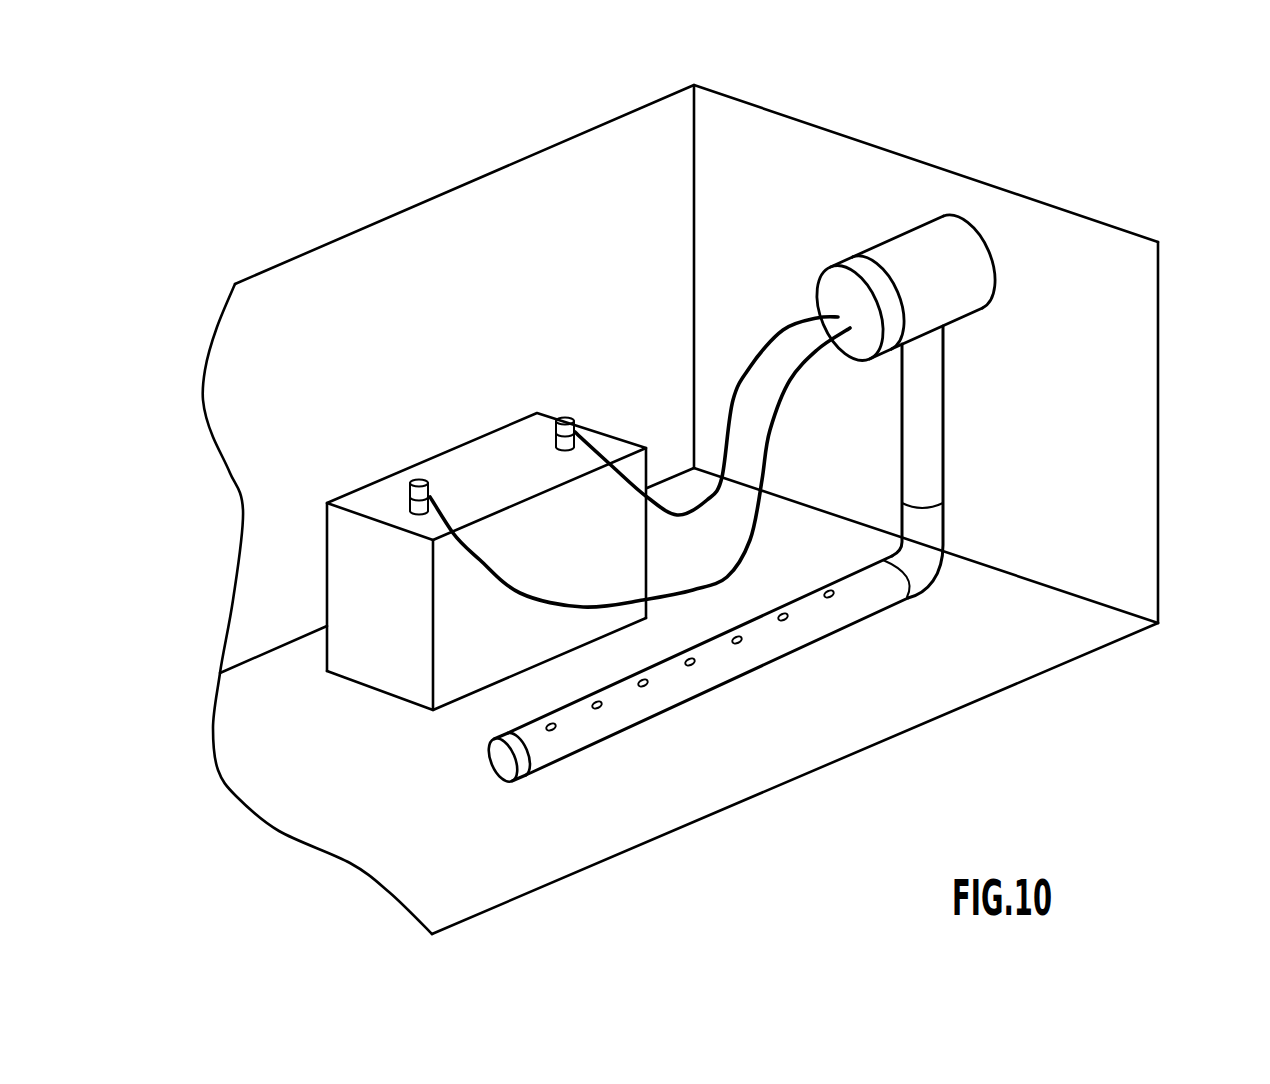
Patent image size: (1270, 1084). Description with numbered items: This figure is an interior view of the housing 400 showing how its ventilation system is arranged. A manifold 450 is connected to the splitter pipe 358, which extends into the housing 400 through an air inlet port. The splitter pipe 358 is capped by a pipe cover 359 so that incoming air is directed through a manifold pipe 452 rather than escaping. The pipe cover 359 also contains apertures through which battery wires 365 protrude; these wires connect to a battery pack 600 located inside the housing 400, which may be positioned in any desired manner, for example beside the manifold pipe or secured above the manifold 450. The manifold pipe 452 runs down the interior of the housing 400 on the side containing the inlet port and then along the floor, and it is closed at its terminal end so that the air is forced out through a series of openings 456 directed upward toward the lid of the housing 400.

The housing 400 is at (1172, 432).
The battery pack 600 is at (358, 583).
The battery wires 365 is at (710, 425).
The splitter pipe 358 is at (947, 219).
The pipe cover 359 is at (838, 280).
The manifold 450 is at (658, 567).
The manifold pipe 452 is at (820, 625).
The holes / apertures 456 is at (600, 709).